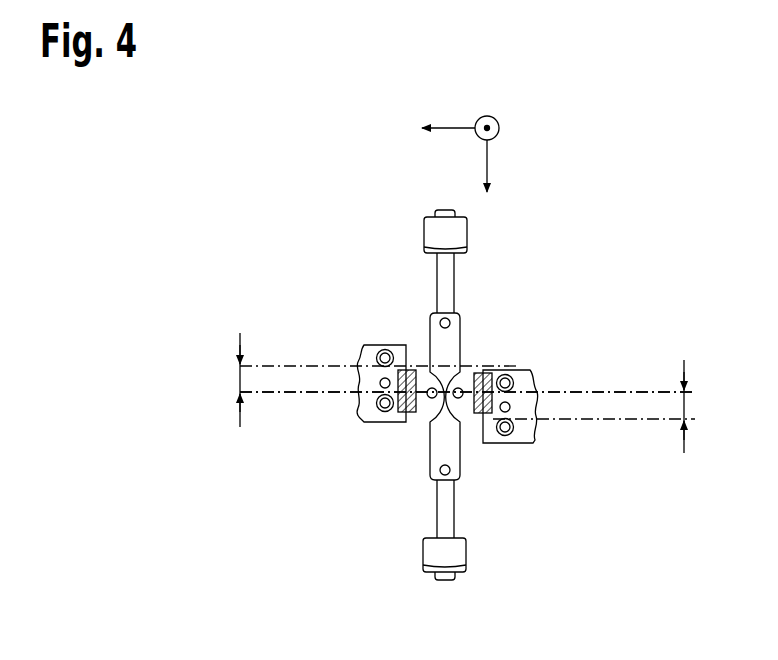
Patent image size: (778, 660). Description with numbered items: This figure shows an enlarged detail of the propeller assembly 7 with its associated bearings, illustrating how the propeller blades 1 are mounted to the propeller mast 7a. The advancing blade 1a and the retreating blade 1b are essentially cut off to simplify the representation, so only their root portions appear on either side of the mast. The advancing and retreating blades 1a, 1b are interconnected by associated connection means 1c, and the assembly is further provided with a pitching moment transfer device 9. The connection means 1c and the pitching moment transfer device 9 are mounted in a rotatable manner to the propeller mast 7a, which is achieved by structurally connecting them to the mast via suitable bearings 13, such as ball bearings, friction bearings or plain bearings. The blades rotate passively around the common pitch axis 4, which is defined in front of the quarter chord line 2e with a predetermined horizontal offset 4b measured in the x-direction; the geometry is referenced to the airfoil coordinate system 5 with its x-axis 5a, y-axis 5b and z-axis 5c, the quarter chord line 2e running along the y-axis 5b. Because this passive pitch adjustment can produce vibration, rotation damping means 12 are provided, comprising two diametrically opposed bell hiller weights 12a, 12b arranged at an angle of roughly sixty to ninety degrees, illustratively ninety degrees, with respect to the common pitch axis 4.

The propeller blade 1 is at (462, 381).
The advancing blade 1a is at (523, 433).
The retreating blade 1b is at (358, 408).
The connection means 1c is at (461, 410).
The quarter chord line 2e is at (275, 365).
The pitch axis 4 is at (644, 390).
The offset 4b is at (240, 378).
The airfoil coordinate system 5 is at (498, 122).
The x-axis 5a is at (486, 165).
The y-axis 5b is at (447, 127).
The z-axis 5c is at (500, 137).
The propeller assembly 7 is at (519, 345).
The propeller mast 7a is at (413, 346).
The pitching moment transfer device 9 is at (481, 349).
The rotation damping means 12 is at (440, 409).
The bell hiller weight 12a is at (440, 233).
The bell hiller weight 12b is at (455, 556).
The bearings 13 is at (413, 425).